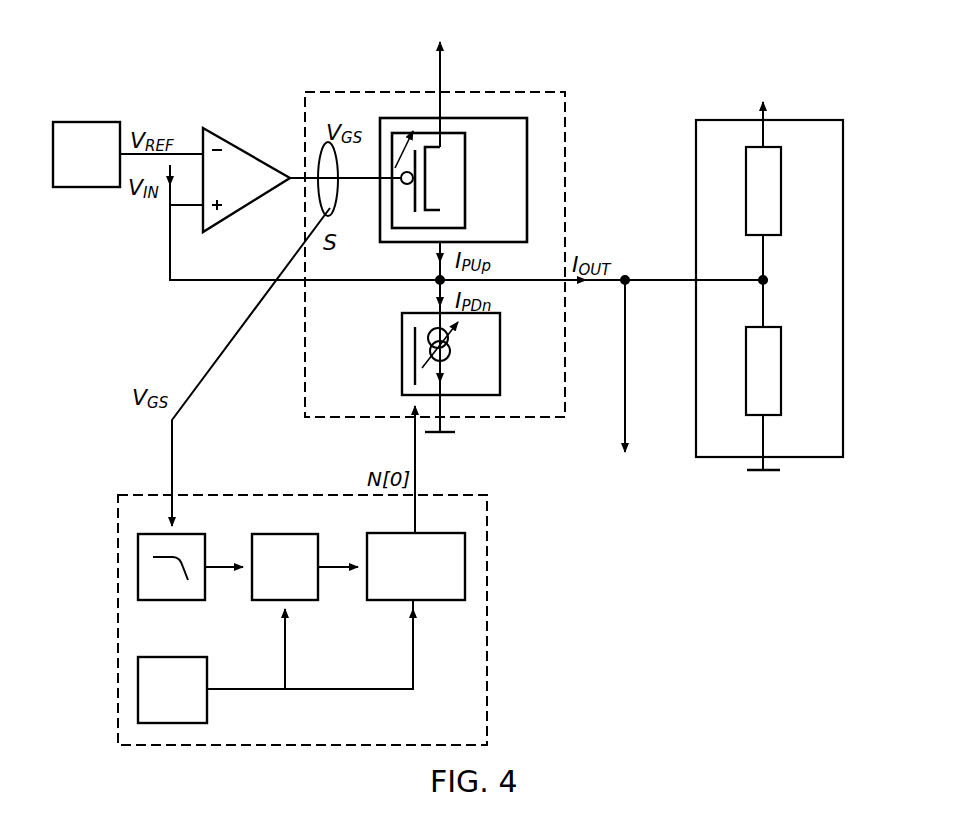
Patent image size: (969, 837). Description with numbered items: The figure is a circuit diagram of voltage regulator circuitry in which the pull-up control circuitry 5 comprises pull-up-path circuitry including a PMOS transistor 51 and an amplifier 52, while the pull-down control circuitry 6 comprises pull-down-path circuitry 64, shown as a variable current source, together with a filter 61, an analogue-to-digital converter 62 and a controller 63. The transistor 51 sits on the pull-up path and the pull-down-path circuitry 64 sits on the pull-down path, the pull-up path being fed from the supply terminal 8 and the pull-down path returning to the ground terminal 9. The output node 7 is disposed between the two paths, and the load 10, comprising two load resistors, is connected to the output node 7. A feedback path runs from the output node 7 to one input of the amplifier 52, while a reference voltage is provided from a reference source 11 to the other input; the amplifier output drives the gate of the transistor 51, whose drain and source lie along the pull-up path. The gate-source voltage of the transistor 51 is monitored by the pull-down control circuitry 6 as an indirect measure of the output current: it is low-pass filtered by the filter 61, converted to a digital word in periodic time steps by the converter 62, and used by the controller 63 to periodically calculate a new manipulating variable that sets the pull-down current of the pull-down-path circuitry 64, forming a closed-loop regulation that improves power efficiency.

The reference source 11 is at (86, 121).
The amplifier 52 is at (249, 152).
The pull-up control circuitry 5 is at (414, 126).
The transistor 51 is at (466, 176).
The supply voltage terminal AVD 8 is at (444, 31).
The output node 7 is at (627, 275).
The pull-down-path circuitry 64 is at (501, 353).
The ground terminal AVS 9 is at (456, 433).
The load 10 is at (843, 282).
The pull-down control circuitry 6 is at (487, 612).
The filter 61 is at (170, 600).
The analogue-to-digital converter 62 is at (270, 600).
The controller 63 is at (392, 600).